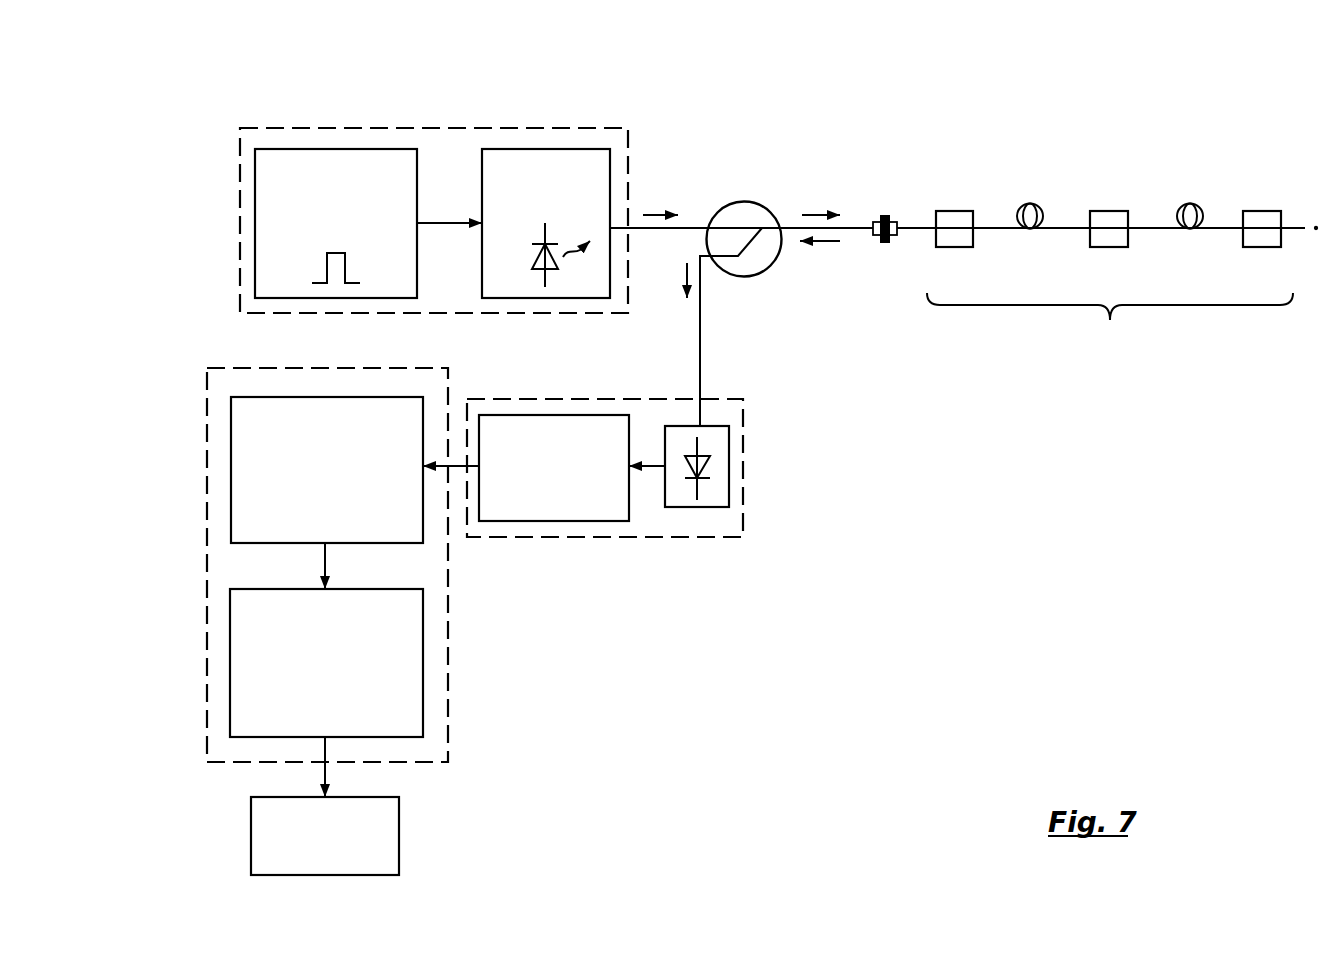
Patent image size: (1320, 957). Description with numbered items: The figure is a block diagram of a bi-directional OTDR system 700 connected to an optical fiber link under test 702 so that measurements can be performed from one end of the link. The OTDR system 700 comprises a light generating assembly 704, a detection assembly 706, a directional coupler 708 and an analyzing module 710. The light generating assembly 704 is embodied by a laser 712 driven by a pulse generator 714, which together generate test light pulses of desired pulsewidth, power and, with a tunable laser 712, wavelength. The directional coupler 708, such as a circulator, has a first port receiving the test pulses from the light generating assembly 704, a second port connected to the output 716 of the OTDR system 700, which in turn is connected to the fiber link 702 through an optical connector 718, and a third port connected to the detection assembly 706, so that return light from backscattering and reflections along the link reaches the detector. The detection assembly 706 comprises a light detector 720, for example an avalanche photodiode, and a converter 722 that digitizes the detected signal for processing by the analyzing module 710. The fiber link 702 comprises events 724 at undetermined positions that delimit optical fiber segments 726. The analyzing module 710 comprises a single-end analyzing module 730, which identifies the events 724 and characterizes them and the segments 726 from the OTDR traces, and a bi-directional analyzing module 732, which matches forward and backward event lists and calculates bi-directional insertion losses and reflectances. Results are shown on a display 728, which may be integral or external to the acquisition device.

The OTDR system 700 is at (857, 110).
The optical fiber link under test 702 is at (1107, 244).
The light generating assembly 704 is at (240, 175).
The detection assembly 706 is at (673, 537).
The directional coupler 708 is at (735, 202).
The analyzing module 710 is at (448, 733).
The laser 712 is at (573, 149).
The pulse generator 714 is at (362, 149).
The output 716 is at (858, 230).
The optical connector 718 is at (887, 215).
The light detector 720 is at (729, 447).
The converter 722 is at (592, 415).
The events 724 is at (955, 211).
The optical fiber segments 726 is at (1035, 203).
The display 728 is at (399, 842).
The single-end analyzing module 730 is at (390, 397).
The bi-directional analyzing module 732 is at (423, 672).